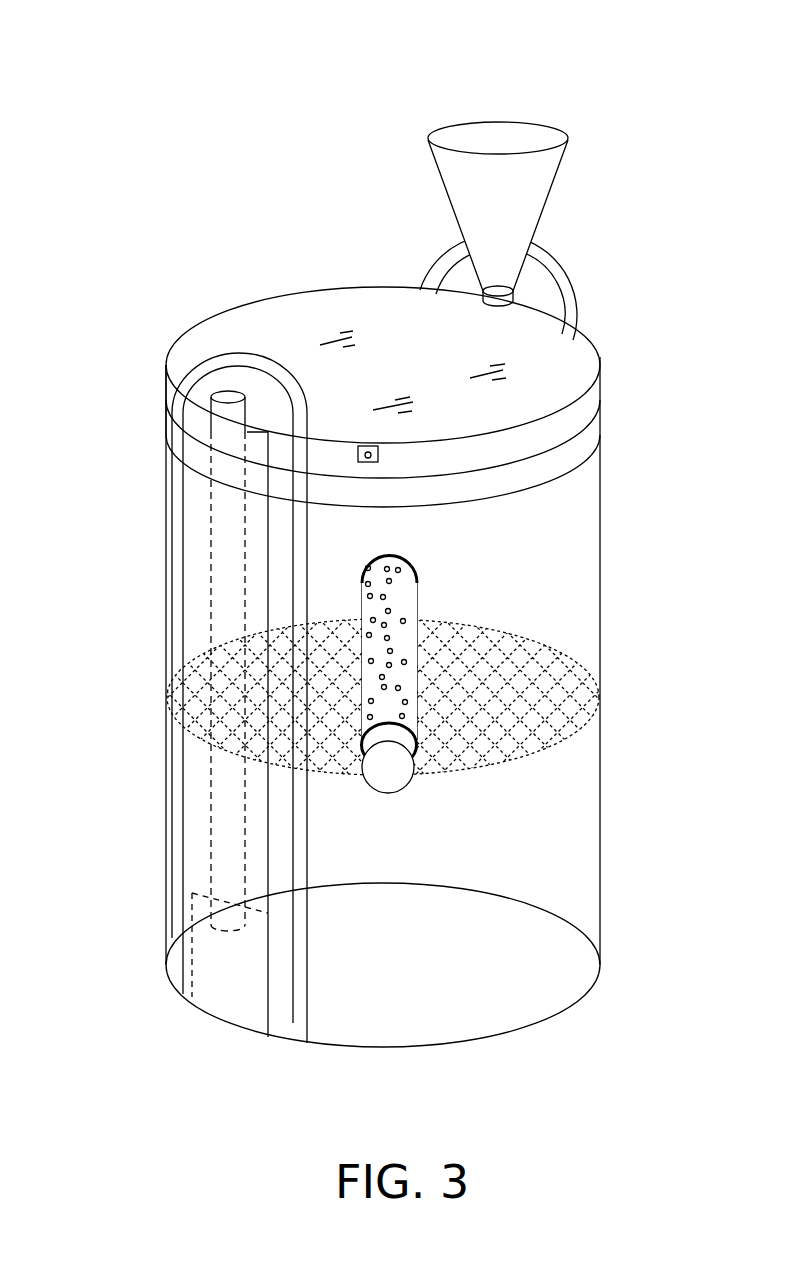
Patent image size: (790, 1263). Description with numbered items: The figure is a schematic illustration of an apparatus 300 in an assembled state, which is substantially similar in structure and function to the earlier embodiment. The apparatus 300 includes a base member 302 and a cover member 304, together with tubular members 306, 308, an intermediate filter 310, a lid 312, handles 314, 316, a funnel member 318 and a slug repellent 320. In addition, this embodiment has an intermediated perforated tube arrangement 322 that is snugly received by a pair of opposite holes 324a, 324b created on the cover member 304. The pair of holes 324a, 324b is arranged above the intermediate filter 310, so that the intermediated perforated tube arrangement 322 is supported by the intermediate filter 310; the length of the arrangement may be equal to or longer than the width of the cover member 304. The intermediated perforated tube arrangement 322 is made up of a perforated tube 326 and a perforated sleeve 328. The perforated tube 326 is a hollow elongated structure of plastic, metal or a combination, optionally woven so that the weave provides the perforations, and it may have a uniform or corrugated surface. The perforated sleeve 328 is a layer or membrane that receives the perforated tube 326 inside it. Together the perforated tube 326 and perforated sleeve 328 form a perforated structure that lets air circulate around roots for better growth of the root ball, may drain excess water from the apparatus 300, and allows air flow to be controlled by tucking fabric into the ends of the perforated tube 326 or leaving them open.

The apparatus 300 is at (603, 64).
The base member 302 is at (440, 1034).
The cover member 304 is at (607, 494).
The tubular member 306 is at (232, 414).
The tubular member 308 is at (512, 293).
The intermediate filter 310 is at (600, 689).
The lid 312 is at (253, 326).
The handle 314 is at (202, 372).
The handle 316 is at (567, 313).
The funnel member 318 is at (535, 212).
The slug repellent 320 is at (568, 460).
The intermediated perforated tube arrangement 322 is at (357, 652).
The hole 324a is at (419, 583).
The hole 324b is at (419, 755).
The perforated tube 326 is at (415, 778).
The perforated sleeve 328 is at (409, 682).